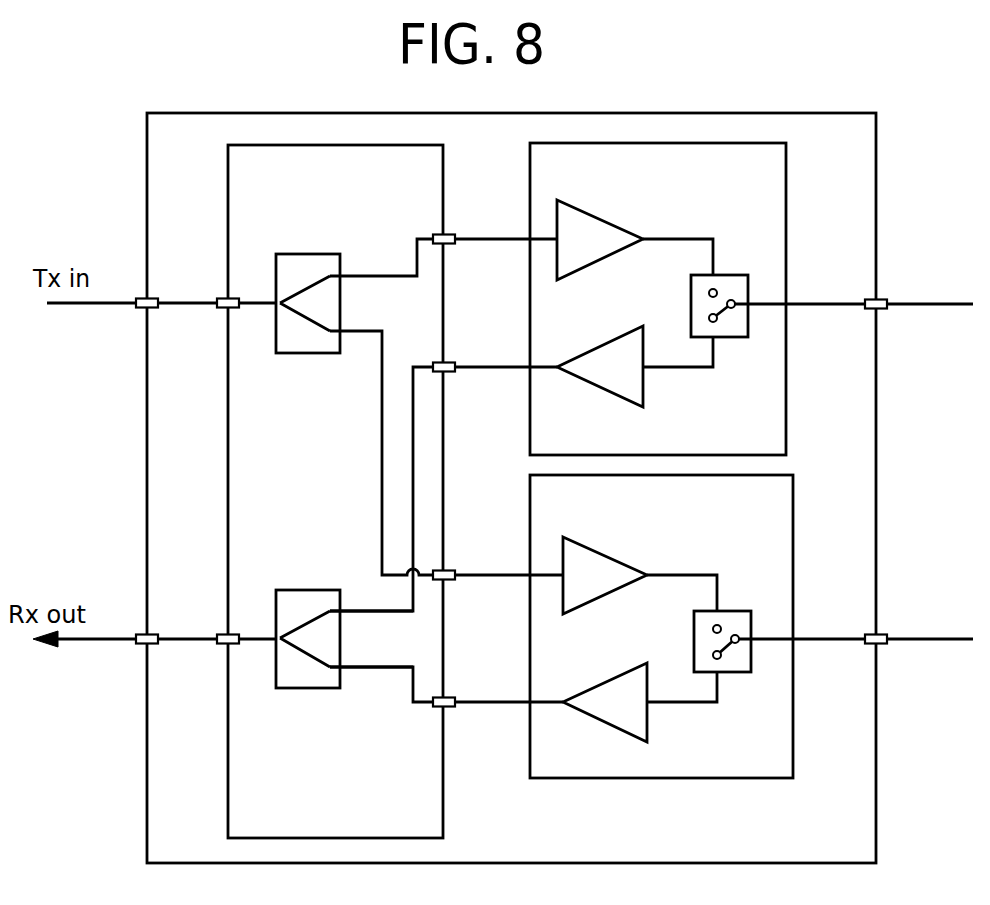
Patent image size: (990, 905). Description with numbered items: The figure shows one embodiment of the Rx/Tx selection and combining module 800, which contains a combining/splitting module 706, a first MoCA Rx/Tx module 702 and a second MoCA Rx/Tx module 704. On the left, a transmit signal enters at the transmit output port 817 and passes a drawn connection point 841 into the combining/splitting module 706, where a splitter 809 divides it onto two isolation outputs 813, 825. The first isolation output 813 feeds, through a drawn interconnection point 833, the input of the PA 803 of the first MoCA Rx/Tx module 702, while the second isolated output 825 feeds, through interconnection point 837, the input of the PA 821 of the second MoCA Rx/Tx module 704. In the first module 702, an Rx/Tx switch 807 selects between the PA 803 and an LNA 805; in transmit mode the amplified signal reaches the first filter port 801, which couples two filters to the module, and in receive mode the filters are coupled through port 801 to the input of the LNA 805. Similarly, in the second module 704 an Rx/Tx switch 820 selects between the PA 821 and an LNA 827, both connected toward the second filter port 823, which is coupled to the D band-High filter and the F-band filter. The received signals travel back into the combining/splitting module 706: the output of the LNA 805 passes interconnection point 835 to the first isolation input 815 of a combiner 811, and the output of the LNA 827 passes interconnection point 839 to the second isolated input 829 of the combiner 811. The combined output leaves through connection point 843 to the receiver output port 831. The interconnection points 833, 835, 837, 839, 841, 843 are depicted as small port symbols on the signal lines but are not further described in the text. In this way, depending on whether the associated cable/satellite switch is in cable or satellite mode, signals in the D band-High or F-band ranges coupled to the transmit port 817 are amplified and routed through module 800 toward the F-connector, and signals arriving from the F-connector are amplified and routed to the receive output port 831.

The Rx/Tx selection and combining module 800 is at (862, 152).
The combining/splitting module 706 is at (290, 186).
The first MoCA Rx/Tx module 702 is at (677, 179).
The second MoCA Rx/Tx module 704 is at (723, 519).
The first filter port 801 is at (885, 309).
The second filter port 823 is at (884, 644).
The PA 803 is at (583, 211).
The LNA 805 is at (590, 385).
The Rx/Tx switch 807 is at (748, 275).
The PA 821 is at (605, 545).
The LNA 827 is at (590, 716).
The Rx/Tx switch 820 is at (737, 673).
The splitter 809 is at (272, 353).
The combiner 811 is at (292, 689).
The isolation output 813 is at (340, 262).
The second isolated output 825 is at (342, 330).
The first isolation input 815 is at (344, 612).
The second isolated output 829 is at (342, 670).
The transmit output port 817 is at (136, 309).
The receiver output port 831 is at (138, 645).
The splitter module input port 841 is at (226, 298).
The combiner module output port 843 is at (226, 634).
The first transmit interconnect port 833 is at (455, 232).
The first receive interconnect port 835 is at (455, 361).
The second transmit interconnect port 837 is at (455, 569).
The second receive interconnect port 839 is at (455, 697).